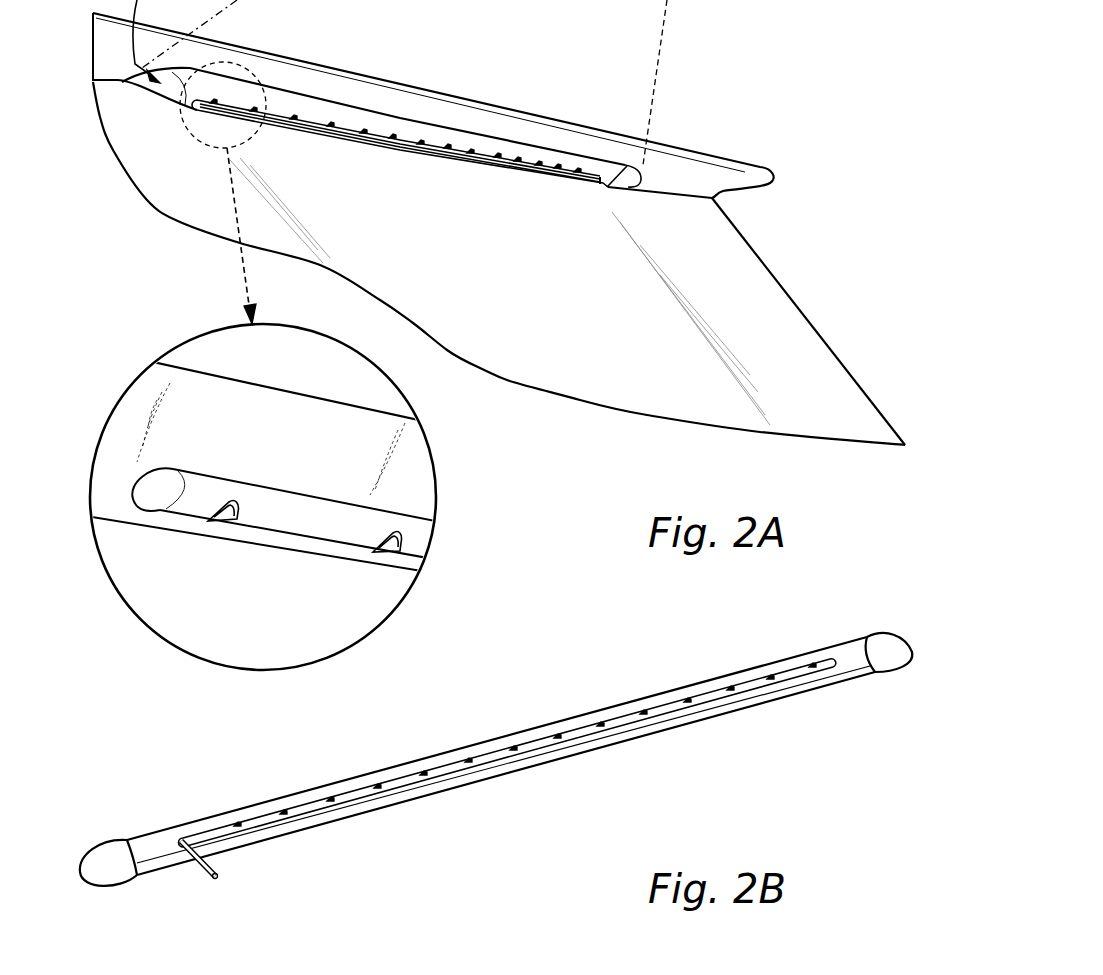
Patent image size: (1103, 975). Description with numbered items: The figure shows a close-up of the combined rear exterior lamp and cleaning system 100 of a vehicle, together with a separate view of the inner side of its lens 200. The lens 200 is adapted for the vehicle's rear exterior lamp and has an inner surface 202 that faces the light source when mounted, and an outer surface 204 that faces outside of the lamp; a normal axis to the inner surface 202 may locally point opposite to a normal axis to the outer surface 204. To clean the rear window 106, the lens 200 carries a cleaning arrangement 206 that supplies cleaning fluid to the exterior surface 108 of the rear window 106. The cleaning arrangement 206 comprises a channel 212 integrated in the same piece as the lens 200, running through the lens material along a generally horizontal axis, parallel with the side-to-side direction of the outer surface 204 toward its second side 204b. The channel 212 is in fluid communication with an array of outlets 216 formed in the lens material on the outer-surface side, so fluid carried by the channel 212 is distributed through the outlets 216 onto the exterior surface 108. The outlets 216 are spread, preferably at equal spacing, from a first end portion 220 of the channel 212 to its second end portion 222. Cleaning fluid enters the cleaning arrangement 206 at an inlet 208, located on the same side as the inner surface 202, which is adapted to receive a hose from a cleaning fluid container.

In FIG. 2A, the combined rear exterior lamp and cleaning system 100 is at (547, 75).
In FIG. 2A, the rear window 106 is at (712, 273).
In FIG. 2A, the exterior surface 108 is at (727, 313).
In FIG. 2A, the lens 200 is at (350, 108).
In FIG. 2B, the inner surface 202 is at (152, 860).
In FIG. 2A, the outer surface 204 is at (228, 100).
In FIG. 2A, the second side 204b is at (637, 163).
In FIG. 2A, the cleaning arrangement 206 is at (423, 142).
In FIG. 2B, the inlet 208 is at (202, 875).
In FIG. 2A, the channel 212 is at (413, 152).
In FIG. 2B, the channel 212 is at (663, 710).
In FIG. 2A, the outlets 216 is at (331, 128).
In FIG. 2B, the outlets 216 is at (515, 760).
In FIG. 2A, the first end portion 220 is at (200, 117).
In FIG. 2A, the second end portion 222 is at (608, 187).